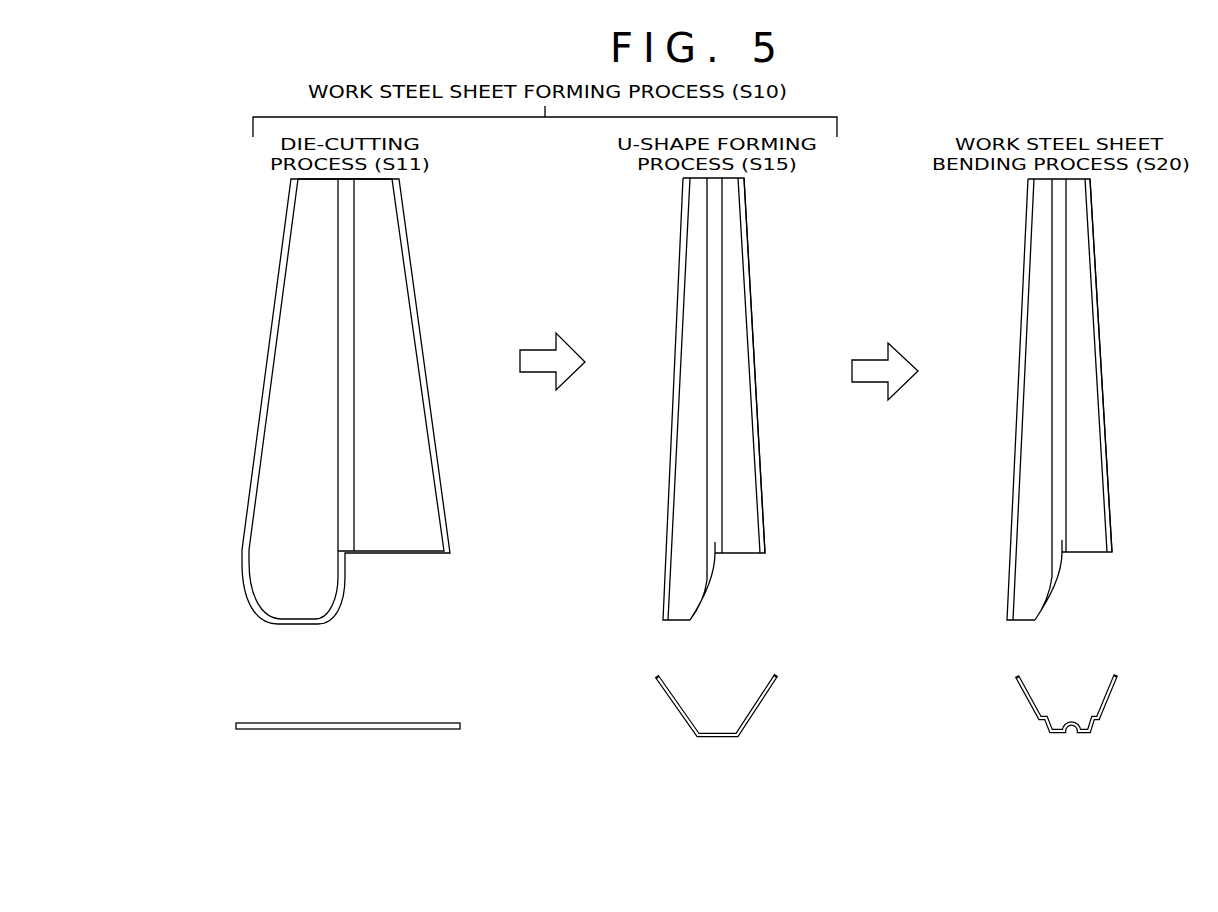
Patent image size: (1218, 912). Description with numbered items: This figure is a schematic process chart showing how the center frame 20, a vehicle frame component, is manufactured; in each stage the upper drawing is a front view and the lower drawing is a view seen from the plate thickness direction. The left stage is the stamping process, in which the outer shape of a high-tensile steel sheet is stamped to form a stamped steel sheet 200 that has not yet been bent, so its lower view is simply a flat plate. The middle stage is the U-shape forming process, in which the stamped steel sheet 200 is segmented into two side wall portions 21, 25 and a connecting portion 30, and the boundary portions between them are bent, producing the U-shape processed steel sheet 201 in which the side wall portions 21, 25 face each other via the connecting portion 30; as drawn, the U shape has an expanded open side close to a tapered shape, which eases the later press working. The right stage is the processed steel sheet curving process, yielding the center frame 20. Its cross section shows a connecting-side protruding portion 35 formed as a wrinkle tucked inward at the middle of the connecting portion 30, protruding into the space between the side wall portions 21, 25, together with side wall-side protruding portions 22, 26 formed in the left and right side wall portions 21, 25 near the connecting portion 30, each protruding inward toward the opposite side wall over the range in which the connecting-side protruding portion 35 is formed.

The stamped steel sheet 200 is at (407, 243).
The U-shape processed steel sheet 201 is at (750, 252).
The center frame 20 is at (1122, 246).
The left side wall portion 21 is at (682, 509).
The right side wall portion 25 is at (747, 507).
The connecting portion 30 is at (717, 556).
The left side wall-side protruding portion 22 is at (1047, 716).
The right side wall-side protruding portion 26 is at (1085, 717).
The connecting-side protruding portion 35 is at (1092, 738).